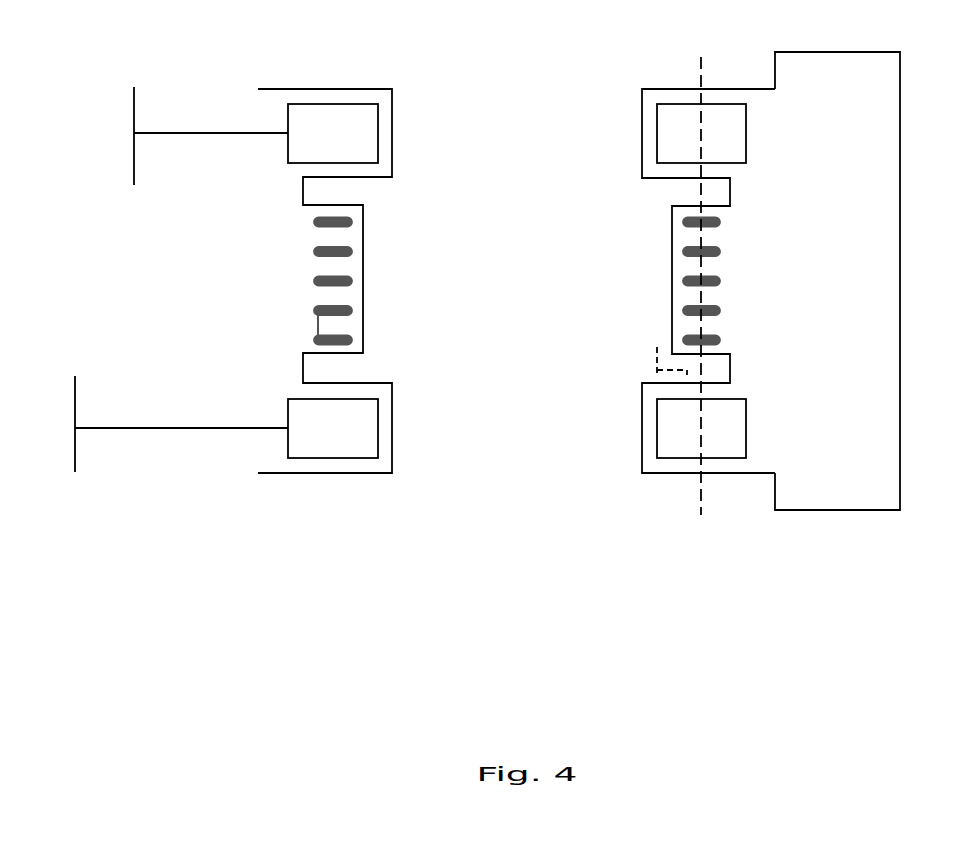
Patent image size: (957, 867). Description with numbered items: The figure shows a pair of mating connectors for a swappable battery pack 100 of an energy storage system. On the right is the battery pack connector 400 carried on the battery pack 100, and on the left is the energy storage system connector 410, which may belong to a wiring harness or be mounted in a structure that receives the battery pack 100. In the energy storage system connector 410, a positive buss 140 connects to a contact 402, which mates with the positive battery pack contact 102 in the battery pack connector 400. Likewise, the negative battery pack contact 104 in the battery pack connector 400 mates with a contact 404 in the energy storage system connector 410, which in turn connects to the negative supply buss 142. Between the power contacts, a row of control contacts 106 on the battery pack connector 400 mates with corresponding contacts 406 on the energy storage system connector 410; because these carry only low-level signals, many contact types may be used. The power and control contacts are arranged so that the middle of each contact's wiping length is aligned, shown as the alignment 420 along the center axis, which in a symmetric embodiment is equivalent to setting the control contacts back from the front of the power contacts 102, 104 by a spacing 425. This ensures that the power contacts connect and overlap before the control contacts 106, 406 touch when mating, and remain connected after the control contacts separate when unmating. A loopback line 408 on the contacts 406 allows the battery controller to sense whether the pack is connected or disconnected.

The battery pack 100 is at (837, 281).
The positive battery pack contact 102 is at (701, 133).
The negative battery pack contact 104 is at (701, 428).
The control contacts 106 is at (730, 227).
The positive buss 140 is at (128, 129).
The negative supply buss 142 is at (84, 392).
The battery pack connector 400 is at (660, 84).
The contact 402 is at (333, 133).
The contact 404 is at (333, 428).
The contacts 406 is at (300, 228).
The loopback line 408 is at (308, 324).
The energy storage system connector 410 is at (385, 84).
The alignment of middle of wiping length 420 is at (694, 494).
The control contact setback spacing 425 is at (666, 362).